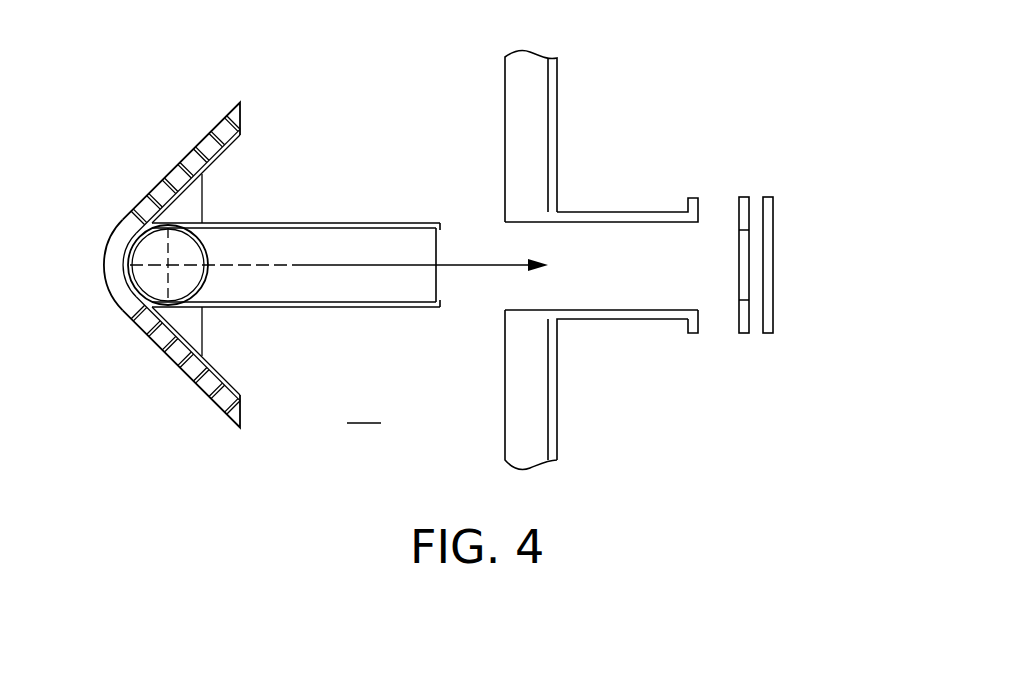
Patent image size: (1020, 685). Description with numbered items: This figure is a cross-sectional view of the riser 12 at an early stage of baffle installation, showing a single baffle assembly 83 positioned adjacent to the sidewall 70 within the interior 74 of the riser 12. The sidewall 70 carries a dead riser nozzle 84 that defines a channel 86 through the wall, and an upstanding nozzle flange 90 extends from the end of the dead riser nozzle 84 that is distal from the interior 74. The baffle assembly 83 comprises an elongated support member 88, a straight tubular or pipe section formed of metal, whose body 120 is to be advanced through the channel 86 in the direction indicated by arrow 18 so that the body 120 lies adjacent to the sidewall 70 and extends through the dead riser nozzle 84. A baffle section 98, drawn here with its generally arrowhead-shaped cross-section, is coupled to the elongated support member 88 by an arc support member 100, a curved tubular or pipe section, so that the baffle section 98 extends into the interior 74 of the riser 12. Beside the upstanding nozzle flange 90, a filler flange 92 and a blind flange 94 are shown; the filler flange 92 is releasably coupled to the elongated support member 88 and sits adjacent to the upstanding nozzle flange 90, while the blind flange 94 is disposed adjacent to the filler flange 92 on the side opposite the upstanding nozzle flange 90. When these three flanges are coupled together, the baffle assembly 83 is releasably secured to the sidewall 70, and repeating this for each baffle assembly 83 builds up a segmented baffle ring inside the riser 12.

The riser 12 is at (638, 58).
The airflow direction 18 is at (475, 268).
The sidewall 70 is at (537, 108).
The interior 74 is at (364, 411).
The baffle assembly 83 is at (104, 266).
The dead riser nozzle 84 is at (640, 320).
The channel 86 is at (608, 257).
The elongated support member 88 is at (345, 223).
The upstanding nozzle flange 90 is at (699, 331).
The filler flange 92 is at (744, 196).
The blind flange 94 is at (774, 302).
The baffle section 98 is at (233, 420).
The arc support member 100 is at (210, 262).
The body 120 is at (305, 307).